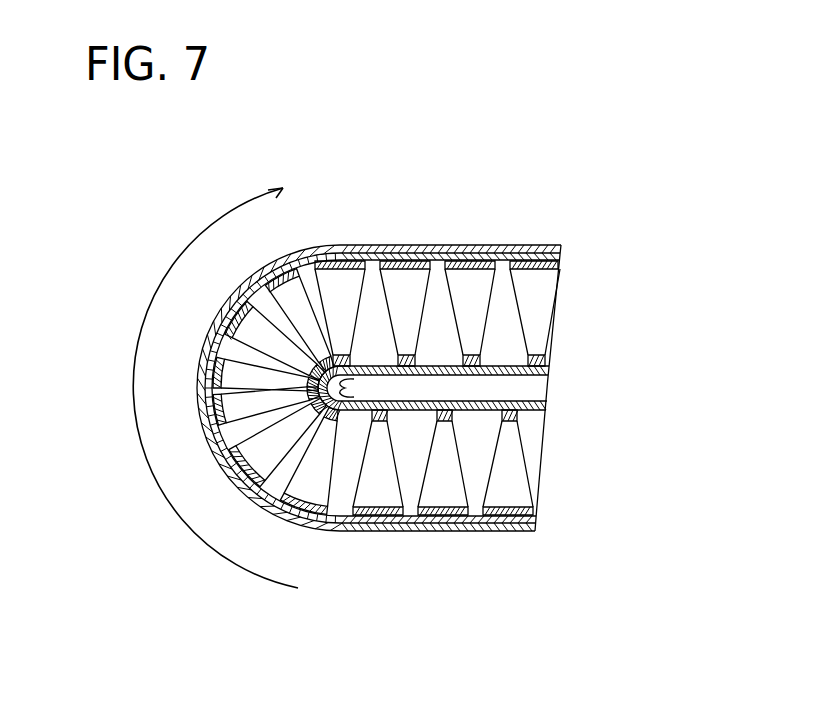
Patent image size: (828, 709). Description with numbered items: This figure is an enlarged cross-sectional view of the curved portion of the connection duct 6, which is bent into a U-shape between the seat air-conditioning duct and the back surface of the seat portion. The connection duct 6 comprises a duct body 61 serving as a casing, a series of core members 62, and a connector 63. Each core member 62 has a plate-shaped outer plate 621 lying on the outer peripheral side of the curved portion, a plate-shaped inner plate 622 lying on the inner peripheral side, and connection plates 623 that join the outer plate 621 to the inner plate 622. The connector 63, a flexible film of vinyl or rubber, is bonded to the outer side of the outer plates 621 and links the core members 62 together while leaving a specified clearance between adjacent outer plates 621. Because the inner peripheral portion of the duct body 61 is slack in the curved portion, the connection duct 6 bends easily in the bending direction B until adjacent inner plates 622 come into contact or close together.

The connection duct 6 is at (414, 338).
The duct body 61 is at (528, 244).
The core members 62 is at (422, 339).
The connector 63 is at (550, 254).
The outer plate 621 is at (482, 271).
The inner plate 622 is at (480, 355).
The connection plates 623 is at (475, 303).
The bending direction B is at (173, 265).